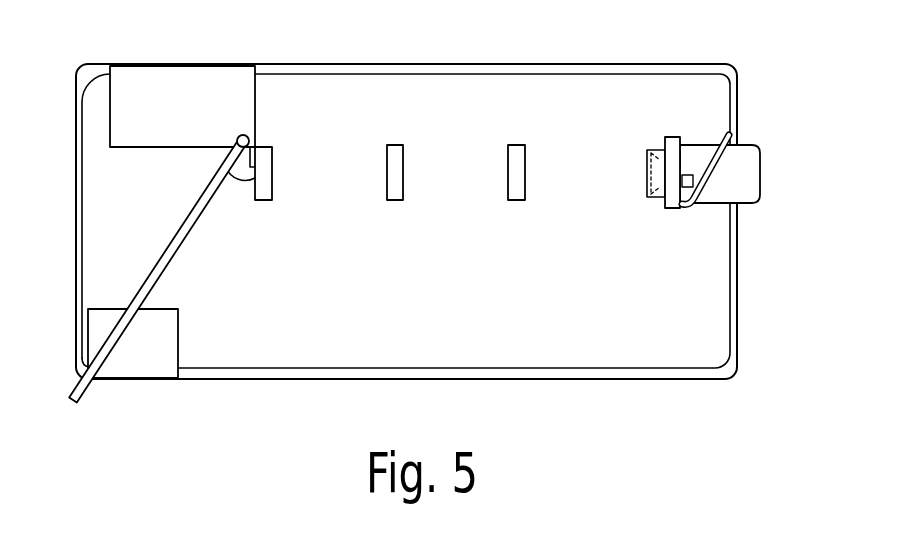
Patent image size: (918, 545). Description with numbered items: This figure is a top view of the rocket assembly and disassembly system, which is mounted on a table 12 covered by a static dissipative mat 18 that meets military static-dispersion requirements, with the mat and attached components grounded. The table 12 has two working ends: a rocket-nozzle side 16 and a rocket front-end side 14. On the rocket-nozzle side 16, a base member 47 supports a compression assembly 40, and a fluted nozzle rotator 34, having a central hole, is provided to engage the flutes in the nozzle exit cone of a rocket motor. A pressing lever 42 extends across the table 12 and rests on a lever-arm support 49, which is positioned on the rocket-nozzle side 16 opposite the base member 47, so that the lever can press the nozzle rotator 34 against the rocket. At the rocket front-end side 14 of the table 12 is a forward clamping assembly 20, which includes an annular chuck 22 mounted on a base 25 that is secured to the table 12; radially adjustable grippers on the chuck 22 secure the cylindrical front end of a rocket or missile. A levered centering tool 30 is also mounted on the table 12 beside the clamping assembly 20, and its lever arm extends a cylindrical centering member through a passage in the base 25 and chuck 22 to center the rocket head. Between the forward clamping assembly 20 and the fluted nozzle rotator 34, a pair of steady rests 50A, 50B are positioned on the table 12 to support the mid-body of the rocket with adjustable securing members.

The table 12 is at (423, 206).
The rocket front-end side 14 is at (738, 273).
The rocket-nozzle side 16 is at (76, 117).
The static dissipative mat 18 is at (662, 369).
The forward clamping assembly 20 is at (676, 183).
The annular chuck 22 is at (649, 199).
The base 25 is at (743, 181).
The levered centering tool 30 is at (722, 160).
The fluted nozzle rotator 34 is at (272, 189).
The compression assembly 40 is at (277, 172).
The pressing lever 42 is at (175, 252).
The base member 47 is at (135, 136).
The lever-arm support 49 is at (145, 358).
The steady rest 50A is at (403, 187).
The steady rest 50B is at (525, 187).